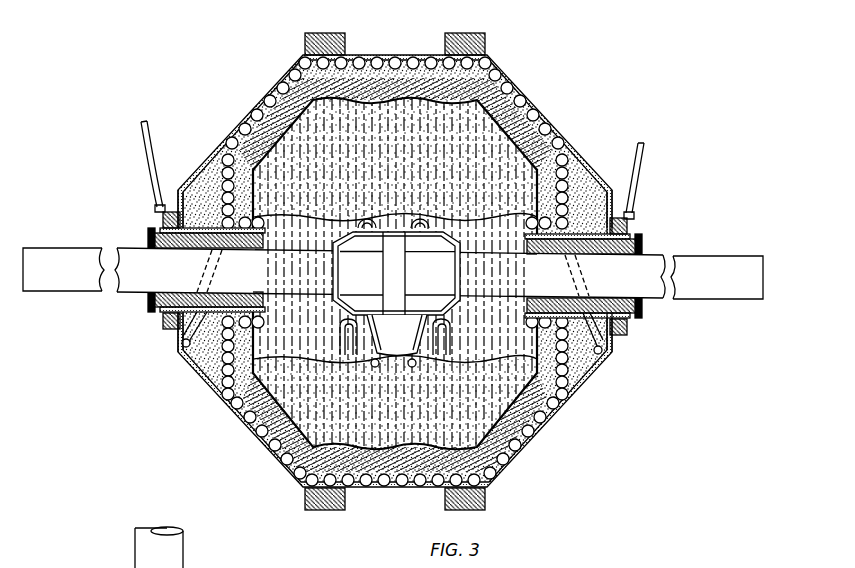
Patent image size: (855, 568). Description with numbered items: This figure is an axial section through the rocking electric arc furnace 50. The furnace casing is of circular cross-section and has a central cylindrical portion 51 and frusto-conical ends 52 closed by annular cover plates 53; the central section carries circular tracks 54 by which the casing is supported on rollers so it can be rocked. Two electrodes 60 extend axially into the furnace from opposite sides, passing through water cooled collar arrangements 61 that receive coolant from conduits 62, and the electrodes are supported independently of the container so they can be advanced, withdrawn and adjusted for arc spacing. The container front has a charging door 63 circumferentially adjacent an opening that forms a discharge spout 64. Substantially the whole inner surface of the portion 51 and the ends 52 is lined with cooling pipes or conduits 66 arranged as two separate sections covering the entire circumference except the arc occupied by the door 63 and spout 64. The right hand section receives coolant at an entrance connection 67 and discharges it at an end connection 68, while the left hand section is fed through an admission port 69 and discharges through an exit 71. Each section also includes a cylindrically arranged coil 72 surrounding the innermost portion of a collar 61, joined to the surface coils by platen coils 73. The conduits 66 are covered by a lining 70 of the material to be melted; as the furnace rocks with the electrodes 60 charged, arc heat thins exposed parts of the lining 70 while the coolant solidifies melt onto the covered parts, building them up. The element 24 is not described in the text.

The conduit 24 is at (181, 550).
The electric arc furnace 50 is at (549, 96).
The central cylindrical portion 51 is at (378, 56).
The frusto-conical ends 52 is at (272, 88).
The annular cover plates 53 is at (177, 193).
The circular tracks 54 is at (303, 500).
The electrodes 60 is at (58, 280).
The water cooled collar arrangements 61 is at (148, 243).
The conduits 62 is at (143, 134).
The charging door 63 is at (385, 235).
The discharge spout 64 is at (400, 340).
The pipes or conduits 66 is at (302, 70).
The entrance connection 67 is at (606, 350).
The end connection 68 is at (395, 402).
The admission port 69 is at (378, 368).
The lining 70 is at (399, 101).
The exit 71 is at (183, 355).
The cylindrically arranged coil 72 is at (220, 330).
The platen coils 73 is at (222, 160).